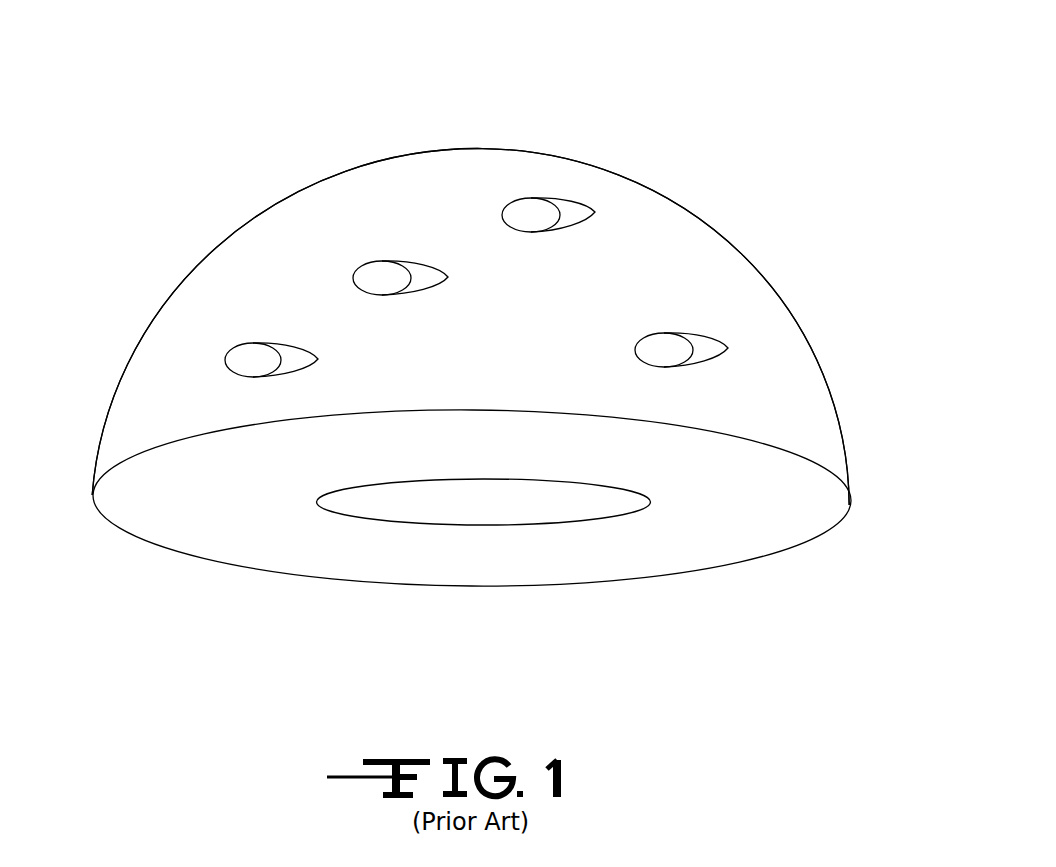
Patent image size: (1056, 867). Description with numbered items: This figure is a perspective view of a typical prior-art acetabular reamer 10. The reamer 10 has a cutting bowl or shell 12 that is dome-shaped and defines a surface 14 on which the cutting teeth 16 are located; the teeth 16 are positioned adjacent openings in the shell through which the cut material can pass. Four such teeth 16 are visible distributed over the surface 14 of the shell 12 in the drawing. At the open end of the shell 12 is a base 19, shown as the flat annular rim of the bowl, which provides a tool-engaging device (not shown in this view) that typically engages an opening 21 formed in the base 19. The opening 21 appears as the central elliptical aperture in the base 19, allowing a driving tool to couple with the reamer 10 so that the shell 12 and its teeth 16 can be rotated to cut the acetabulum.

The acetabular reamer 10 is at (558, 384).
The cutting bowl or shell 12 is at (819, 380).
The surface 14 is at (371, 185).
The teeth 16 is at (590, 178).
The base 19 is at (229, 524).
The opening 21 is at (465, 522).